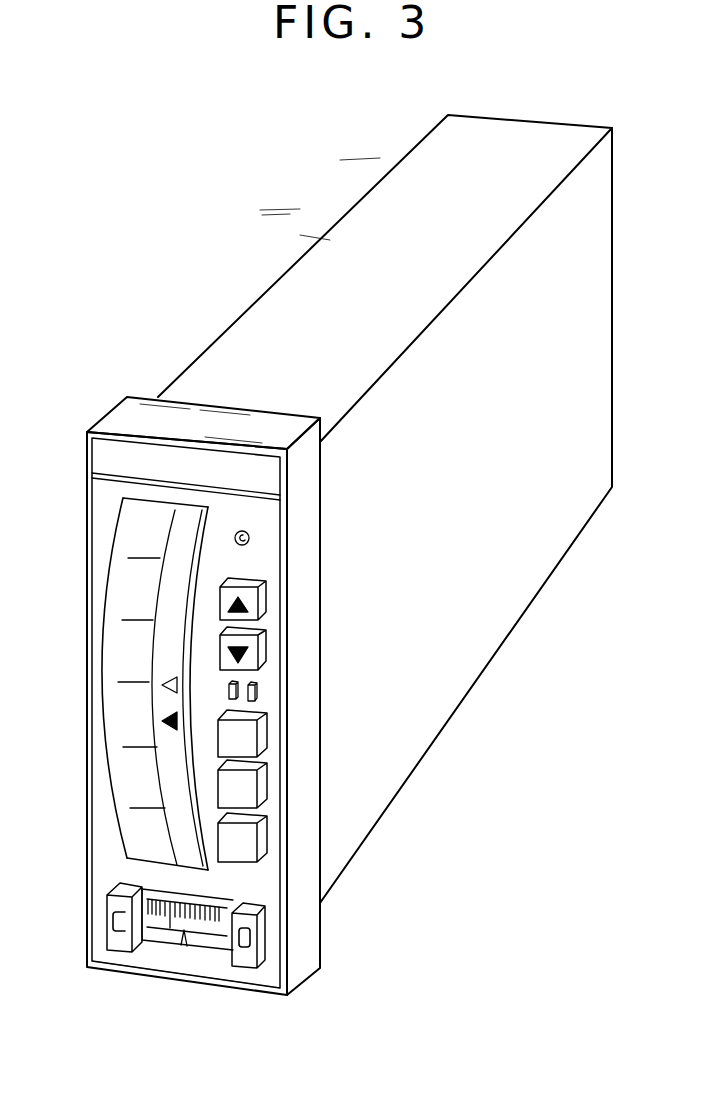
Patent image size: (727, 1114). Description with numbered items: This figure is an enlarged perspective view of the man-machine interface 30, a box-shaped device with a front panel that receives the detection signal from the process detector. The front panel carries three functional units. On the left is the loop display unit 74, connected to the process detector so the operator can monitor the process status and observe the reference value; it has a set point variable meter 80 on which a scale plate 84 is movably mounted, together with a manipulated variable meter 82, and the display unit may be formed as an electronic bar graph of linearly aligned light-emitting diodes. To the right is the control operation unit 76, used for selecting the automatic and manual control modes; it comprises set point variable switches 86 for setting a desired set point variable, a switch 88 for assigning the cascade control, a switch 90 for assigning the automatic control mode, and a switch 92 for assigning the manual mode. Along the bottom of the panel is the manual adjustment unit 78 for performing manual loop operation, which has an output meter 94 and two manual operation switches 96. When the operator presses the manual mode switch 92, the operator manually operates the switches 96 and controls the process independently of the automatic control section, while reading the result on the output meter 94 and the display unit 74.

The man-machine interface 30 is at (269, 280).
The loop display unit 74 is at (113, 811).
The control operation unit 76 is at (260, 660).
The manual adjustment unit 78 is at (213, 962).
The set point variable meter 80 is at (171, 677).
The manipulated variable meter 82 is at (169, 731).
The scale plate 84 is at (113, 638).
The set point variable switches 86 is at (262, 610).
The cascade control switch 88 is at (258, 746).
The automatic control mode switch 90 is at (258, 795).
The manual mode switch 92 is at (258, 848).
The output meter 94 is at (168, 938).
The manual operation switches 96 is at (247, 960).